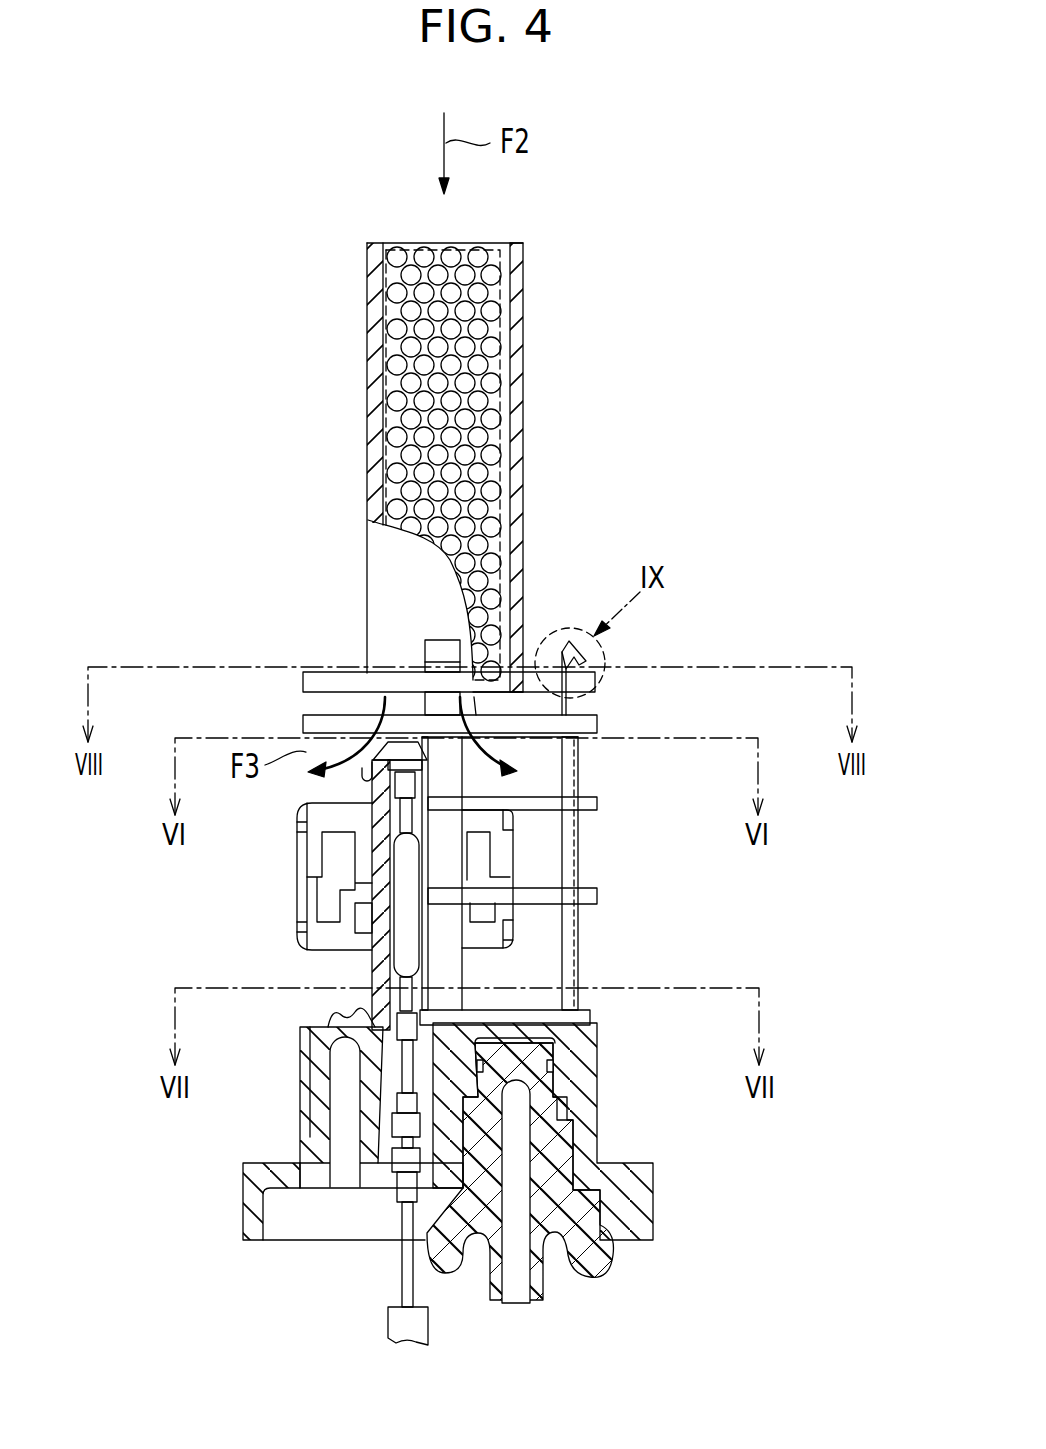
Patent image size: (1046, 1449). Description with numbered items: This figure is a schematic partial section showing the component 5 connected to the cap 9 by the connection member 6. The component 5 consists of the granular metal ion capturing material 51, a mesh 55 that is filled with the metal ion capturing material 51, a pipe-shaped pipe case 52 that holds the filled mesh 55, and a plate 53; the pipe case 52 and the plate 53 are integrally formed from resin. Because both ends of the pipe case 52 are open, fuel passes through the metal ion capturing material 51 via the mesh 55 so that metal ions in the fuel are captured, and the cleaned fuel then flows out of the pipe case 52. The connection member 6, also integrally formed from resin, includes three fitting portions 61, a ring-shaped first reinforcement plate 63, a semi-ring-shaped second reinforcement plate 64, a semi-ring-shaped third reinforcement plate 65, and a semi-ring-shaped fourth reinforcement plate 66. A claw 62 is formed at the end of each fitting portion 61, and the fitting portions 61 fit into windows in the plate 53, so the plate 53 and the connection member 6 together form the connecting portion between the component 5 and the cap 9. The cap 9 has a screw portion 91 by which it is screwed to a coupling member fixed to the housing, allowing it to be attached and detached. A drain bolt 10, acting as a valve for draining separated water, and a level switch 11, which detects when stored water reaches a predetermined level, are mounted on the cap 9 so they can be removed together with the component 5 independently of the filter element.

The component 5 is at (645, 203).
The metal ion capturing material 51 is at (451, 315).
The pipe case 52 is at (516, 356).
The plate 53 is at (552, 690).
The mesh 55 is at (462, 252).
The connection member 6 is at (582, 948).
The fitting portion 61 is at (572, 843).
The claw 62 is at (593, 643).
The first reinforcement plate 63 is at (585, 727).
The second reinforcement plate 64 is at (596, 803).
The third reinforcement plate 65 is at (588, 897).
The fourth reinforcement plate 66 is at (578, 1017).
The level switch 11 is at (298, 905).
The screw portion 91 is at (308, 1088).
The cap 9 is at (252, 1214).
The drain bolt 10 is at (585, 1258).